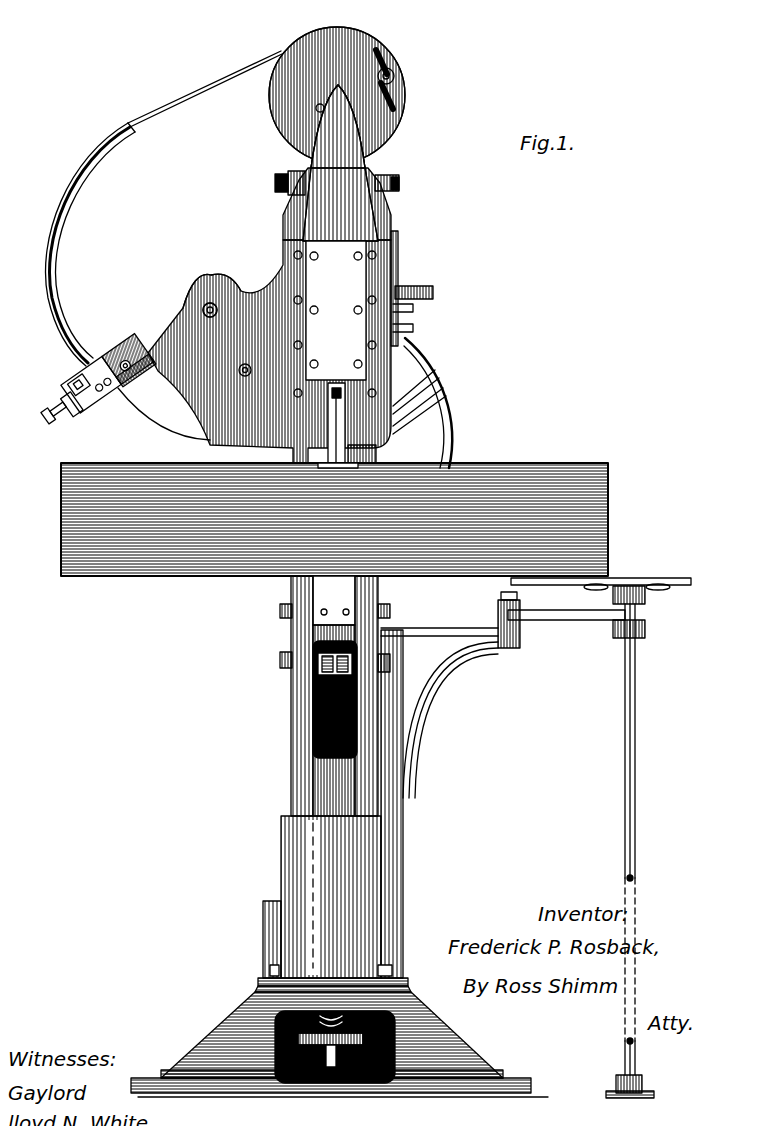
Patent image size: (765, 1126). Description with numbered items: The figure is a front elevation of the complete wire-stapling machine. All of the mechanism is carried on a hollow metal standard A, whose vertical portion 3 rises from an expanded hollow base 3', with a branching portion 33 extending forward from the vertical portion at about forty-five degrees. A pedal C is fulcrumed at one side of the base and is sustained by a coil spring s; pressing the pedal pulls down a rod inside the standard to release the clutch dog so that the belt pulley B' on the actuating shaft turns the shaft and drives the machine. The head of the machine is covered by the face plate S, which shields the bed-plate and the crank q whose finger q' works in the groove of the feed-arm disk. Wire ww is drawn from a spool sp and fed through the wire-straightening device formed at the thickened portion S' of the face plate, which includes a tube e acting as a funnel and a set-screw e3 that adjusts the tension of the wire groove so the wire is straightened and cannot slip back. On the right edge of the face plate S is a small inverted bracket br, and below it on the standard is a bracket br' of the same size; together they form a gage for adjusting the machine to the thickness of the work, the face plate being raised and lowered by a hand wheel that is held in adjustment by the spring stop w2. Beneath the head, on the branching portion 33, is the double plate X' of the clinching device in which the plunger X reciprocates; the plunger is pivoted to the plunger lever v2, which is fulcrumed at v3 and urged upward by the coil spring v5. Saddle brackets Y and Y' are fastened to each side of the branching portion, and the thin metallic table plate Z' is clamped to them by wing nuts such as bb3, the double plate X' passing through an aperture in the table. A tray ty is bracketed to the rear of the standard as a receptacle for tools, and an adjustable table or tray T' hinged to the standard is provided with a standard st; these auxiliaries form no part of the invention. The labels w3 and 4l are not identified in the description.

The spool sp is at (346, 36).
The wire ww is at (176, 92).
The blade guide clamp w3 is at (284, 163).
The spring stop w2 is at (388, 175).
The tube e is at (48, 256).
The set-screw e3 is at (68, 392).
The finger of the crank q' is at (199, 287).
The crank q is at (204, 328).
The face plate S is at (273, 274).
The thickened portion of the face plate S' is at (104, 370).
The adjustable table or tray T' is at (146, 383).
The tray ty is at (410, 277).
The inverted bracket br is at (428, 311).
The bracket br' is at (429, 335).
The belt pulley B' is at (446, 403).
The thin metallic plate Z' is at (316, 504).
The wing nut bb3 is at (345, 463).
The double plate X' is at (334, 554).
The saddle bracket Y' is at (271, 605).
The saddle bracket Y is at (401, 605).
The plunger X is at (282, 650).
The fulcrum of the plunger lever v3 is at (382, 656).
The plunger lever v2 is at (308, 678).
The coil spring v5 is at (310, 692).
The branching portion 33 is at (345, 722).
The hollow metal standard A is at (318, 777).
The vertical portion 3 is at (333, 904).
The coil spring s is at (328, 1005).
The pedal C is at (290, 1027).
The expanded hollow base 3' is at (332, 1035).
The gauge bracket 4l is at (645, 578).
The standard st is at (630, 740).